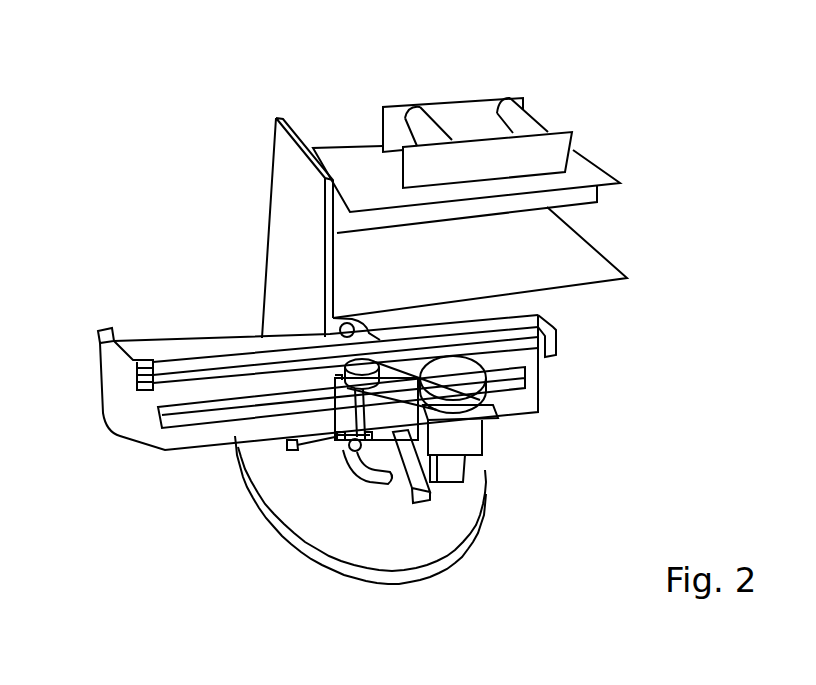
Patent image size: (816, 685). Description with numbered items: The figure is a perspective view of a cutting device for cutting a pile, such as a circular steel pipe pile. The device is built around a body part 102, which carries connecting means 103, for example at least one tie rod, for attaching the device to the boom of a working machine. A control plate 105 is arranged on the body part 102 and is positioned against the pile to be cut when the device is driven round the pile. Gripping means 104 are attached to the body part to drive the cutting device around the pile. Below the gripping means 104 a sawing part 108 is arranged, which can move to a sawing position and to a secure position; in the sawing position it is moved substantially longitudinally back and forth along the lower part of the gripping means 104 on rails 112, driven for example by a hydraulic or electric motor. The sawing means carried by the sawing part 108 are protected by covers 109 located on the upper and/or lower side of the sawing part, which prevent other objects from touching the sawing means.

The body part 102 is at (587, 173).
The connecting means 103 is at (413, 117).
The gripping means 104 is at (109, 342).
The control plate 105 is at (300, 224).
The sawing part 108 is at (345, 410).
The cover 109 is at (330, 537).
The rails 112 is at (170, 417).